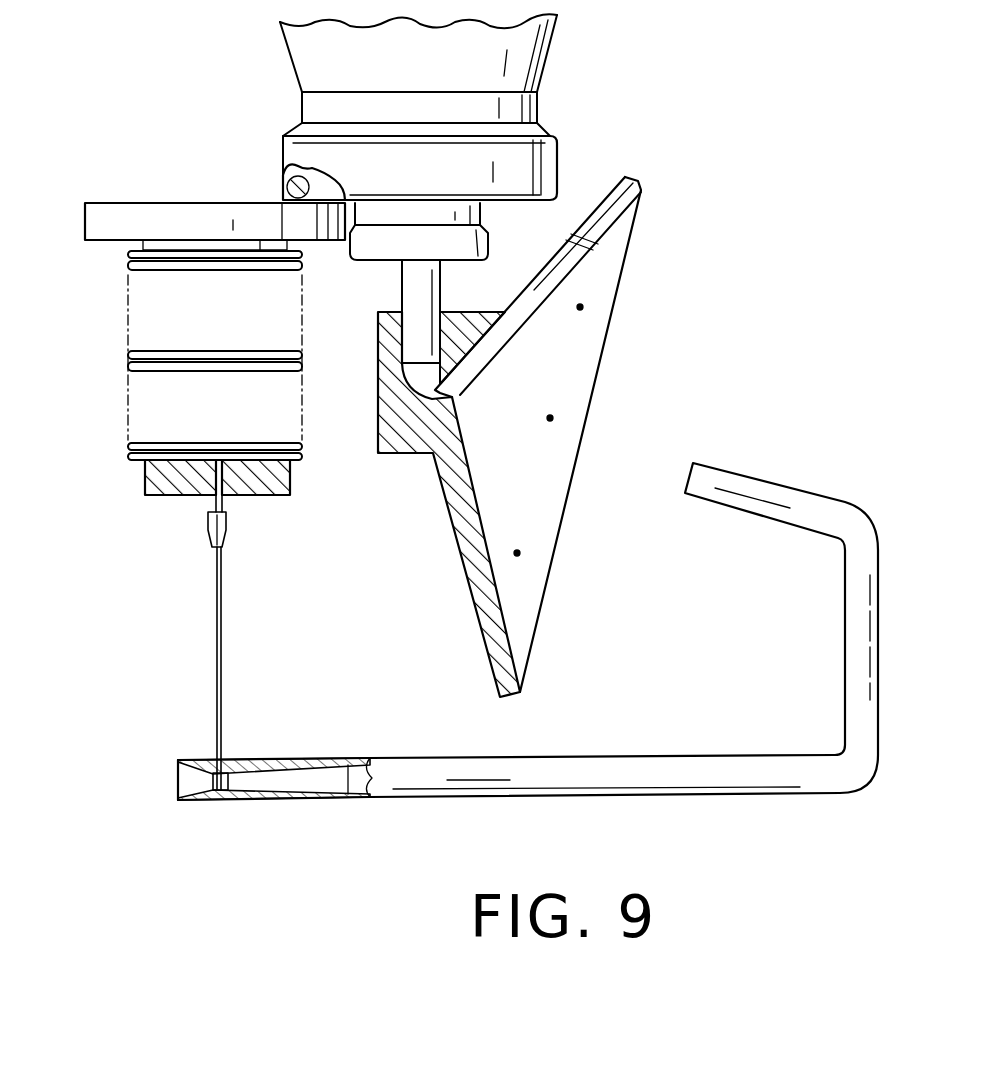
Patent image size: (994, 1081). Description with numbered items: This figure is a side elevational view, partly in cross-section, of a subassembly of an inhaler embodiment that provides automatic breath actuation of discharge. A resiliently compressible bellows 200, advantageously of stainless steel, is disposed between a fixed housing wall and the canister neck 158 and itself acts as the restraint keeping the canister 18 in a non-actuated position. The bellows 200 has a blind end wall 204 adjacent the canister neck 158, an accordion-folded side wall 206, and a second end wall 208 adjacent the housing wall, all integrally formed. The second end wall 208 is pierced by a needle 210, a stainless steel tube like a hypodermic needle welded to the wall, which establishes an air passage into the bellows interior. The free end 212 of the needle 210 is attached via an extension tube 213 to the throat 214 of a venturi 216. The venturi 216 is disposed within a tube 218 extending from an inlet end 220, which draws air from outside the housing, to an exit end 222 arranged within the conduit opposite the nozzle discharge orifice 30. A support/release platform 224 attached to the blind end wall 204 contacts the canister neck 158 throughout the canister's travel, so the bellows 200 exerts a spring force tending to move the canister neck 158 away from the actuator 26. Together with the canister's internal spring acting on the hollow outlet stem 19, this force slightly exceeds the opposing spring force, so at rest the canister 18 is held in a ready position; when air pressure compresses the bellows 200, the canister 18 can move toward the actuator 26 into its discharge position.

The canister 18 is at (440, 78).
The canister neck 158 is at (303, 170).
The hollow outlet stem 19 is at (418, 306).
The actuator 26 is at (380, 458).
The nozzle discharge orifice 30 is at (452, 400).
The support/release platform 224 is at (112, 228).
The bellows 200 is at (105, 323).
The blind end wall 204 is at (200, 245).
The accordion-folded side wall 206 is at (130, 365).
The second end wall 208 is at (165, 458).
The needle 210 is at (160, 498).
The free end 212 is at (228, 537).
The extension tube 213 is at (223, 612).
The venturi 216 is at (268, 762).
The inlet end 220 is at (180, 765).
The throat 214 is at (222, 793).
The tube 218 is at (540, 790).
The exit end 222 is at (683, 462).